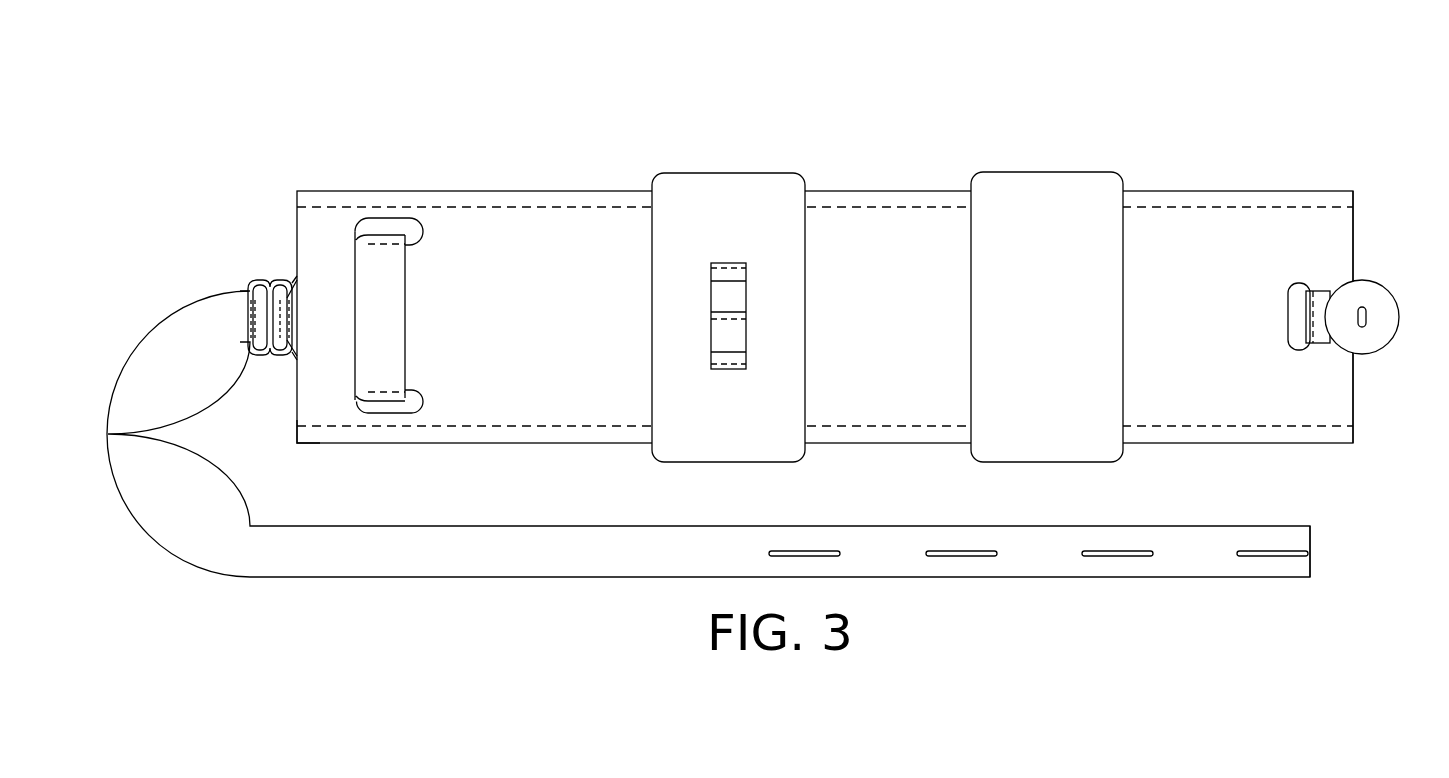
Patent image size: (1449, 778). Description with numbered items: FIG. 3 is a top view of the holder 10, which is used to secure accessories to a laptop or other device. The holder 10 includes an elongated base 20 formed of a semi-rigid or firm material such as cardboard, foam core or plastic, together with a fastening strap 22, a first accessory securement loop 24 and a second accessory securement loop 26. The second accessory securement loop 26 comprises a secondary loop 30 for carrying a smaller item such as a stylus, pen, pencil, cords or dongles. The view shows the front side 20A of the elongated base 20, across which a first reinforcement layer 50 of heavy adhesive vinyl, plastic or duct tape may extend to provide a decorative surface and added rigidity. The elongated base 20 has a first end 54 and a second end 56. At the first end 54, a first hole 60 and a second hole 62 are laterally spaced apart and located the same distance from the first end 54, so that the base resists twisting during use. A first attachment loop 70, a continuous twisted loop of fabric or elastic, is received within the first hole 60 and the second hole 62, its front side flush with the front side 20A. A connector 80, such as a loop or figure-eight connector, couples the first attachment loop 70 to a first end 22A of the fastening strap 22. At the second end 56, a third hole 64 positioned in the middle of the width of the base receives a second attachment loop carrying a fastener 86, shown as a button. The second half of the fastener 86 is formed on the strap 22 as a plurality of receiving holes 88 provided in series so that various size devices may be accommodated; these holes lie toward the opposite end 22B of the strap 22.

The holder 10 is at (911, 132).
The elongated base 20 is at (457, 213).
The front side 20A is at (1236, 240).
The fastening strap 22 is at (603, 558).
The first end of the fastening strap 22A is at (242, 334).
The second end of strap 22B is at (1197, 567).
The first accessory securement loop 24 is at (1047, 195).
The second accessory securement loop 26 is at (763, 190).
The secondary loop 30 is at (731, 287).
The first reinforcement layer 50 is at (1316, 220).
The first end 54 is at (297, 437).
The second end 56 is at (1353, 432).
The first hole 60 is at (390, 226).
The second hole 62 is at (390, 405).
The third hole 64 is at (1298, 340).
The first attachment loop 70 is at (385, 400).
The connector 80 is at (270, 285).
The fastener 86 is at (1383, 290).
The receiving holes 88 is at (833, 556).